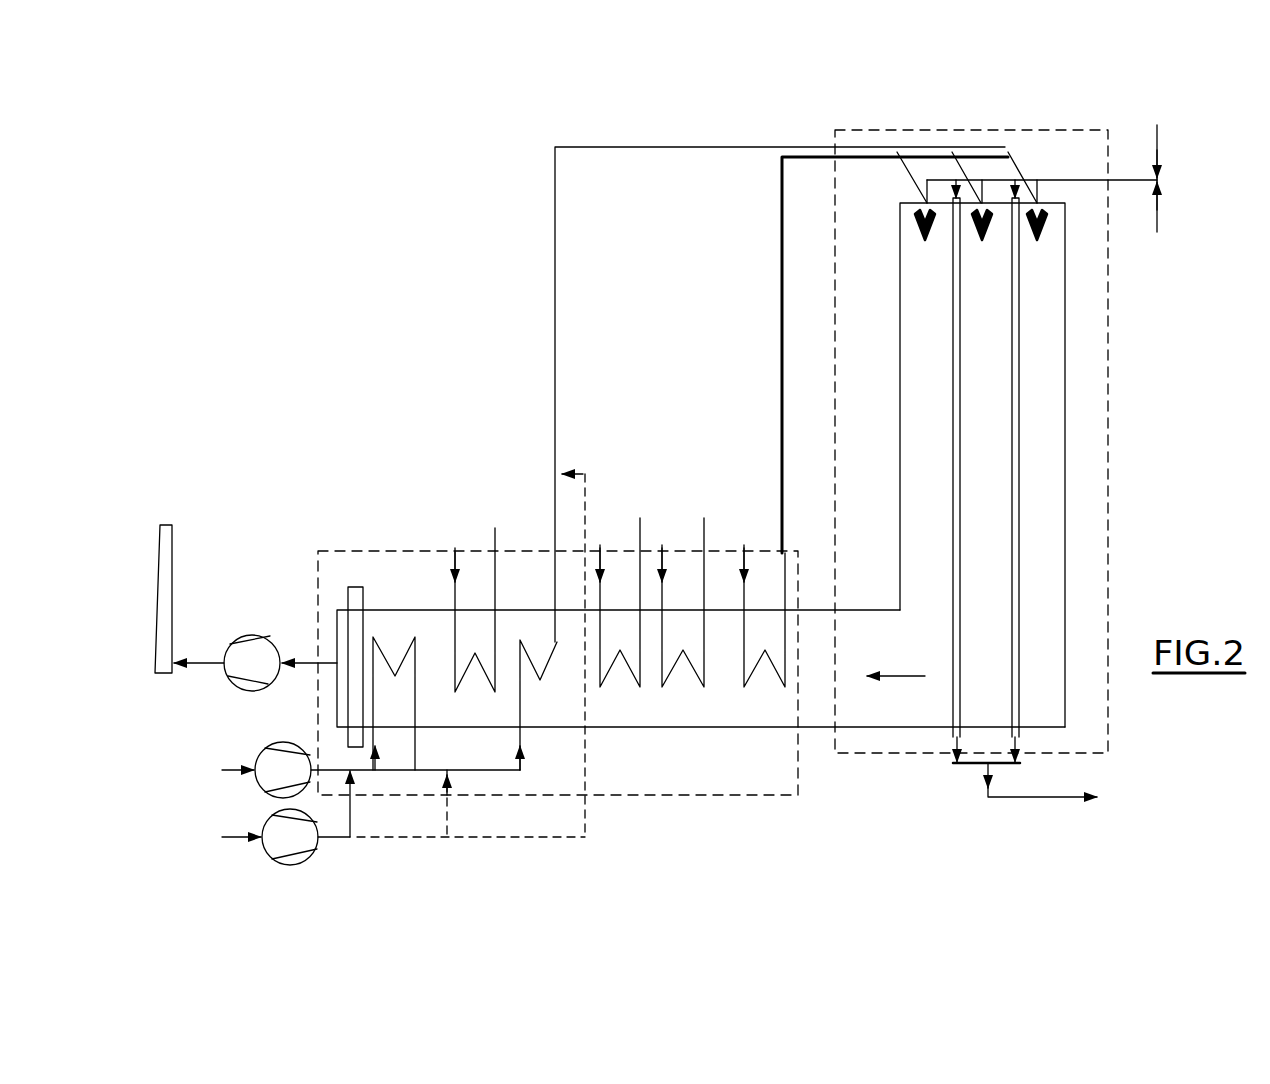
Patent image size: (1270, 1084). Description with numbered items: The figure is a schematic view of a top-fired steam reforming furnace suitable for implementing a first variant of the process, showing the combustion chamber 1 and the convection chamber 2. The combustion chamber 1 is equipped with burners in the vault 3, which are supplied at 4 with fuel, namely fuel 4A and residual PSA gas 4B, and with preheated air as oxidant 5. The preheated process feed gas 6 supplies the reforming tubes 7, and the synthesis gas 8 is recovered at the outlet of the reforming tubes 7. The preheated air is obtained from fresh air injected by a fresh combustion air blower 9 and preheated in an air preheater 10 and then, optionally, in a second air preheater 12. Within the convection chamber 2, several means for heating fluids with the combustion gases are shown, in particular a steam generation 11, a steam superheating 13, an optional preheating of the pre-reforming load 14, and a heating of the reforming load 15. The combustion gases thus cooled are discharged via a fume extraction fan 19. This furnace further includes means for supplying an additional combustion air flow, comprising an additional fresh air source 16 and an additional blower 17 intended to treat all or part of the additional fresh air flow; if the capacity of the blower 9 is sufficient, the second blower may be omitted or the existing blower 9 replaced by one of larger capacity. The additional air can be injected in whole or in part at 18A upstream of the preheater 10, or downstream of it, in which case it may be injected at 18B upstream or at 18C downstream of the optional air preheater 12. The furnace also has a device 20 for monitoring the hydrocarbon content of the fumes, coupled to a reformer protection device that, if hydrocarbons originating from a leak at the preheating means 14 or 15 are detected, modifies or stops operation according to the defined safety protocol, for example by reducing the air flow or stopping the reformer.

The combustion chamber 1 is at (1067, 483).
The convection chamber 2 is at (432, 605).
The burners in the vault 3 is at (1037, 205).
The fuel supply 4 is at (1128, 182).
The fuel 4A is at (1157, 148).
The residual PSA gas 4B is at (1157, 212).
The preheated air 5 is at (680, 147).
The preheated process feed gas 6 is at (782, 315).
The reforming tubes 7 is at (952, 363).
The synthesis gas 8 is at (957, 740).
The fresh combustion air blower 9 is at (258, 787).
The air preheater 10 is at (415, 693).
The steam generation 11 is at (482, 655).
The optional air preheater 12 is at (557, 658).
The steam superheating 13 is at (623, 643).
The preheating of the pre-reforming load 14 is at (693, 657).
The heating of the reforming load 15 is at (773, 648).
The additional fresh air source 16 is at (264, 846).
The additional blower 17 is at (292, 865).
The injection point upstream of the preheater 18A is at (352, 815).
The injection point upstream of the optional air preheater 18B is at (449, 815).
The injection point downstream of the optional air preheater 18C is at (587, 820).
The fume extraction fan 19 is at (250, 636).
The device for monitoring the hydrocarbon content of the fumes 20 is at (343, 618).